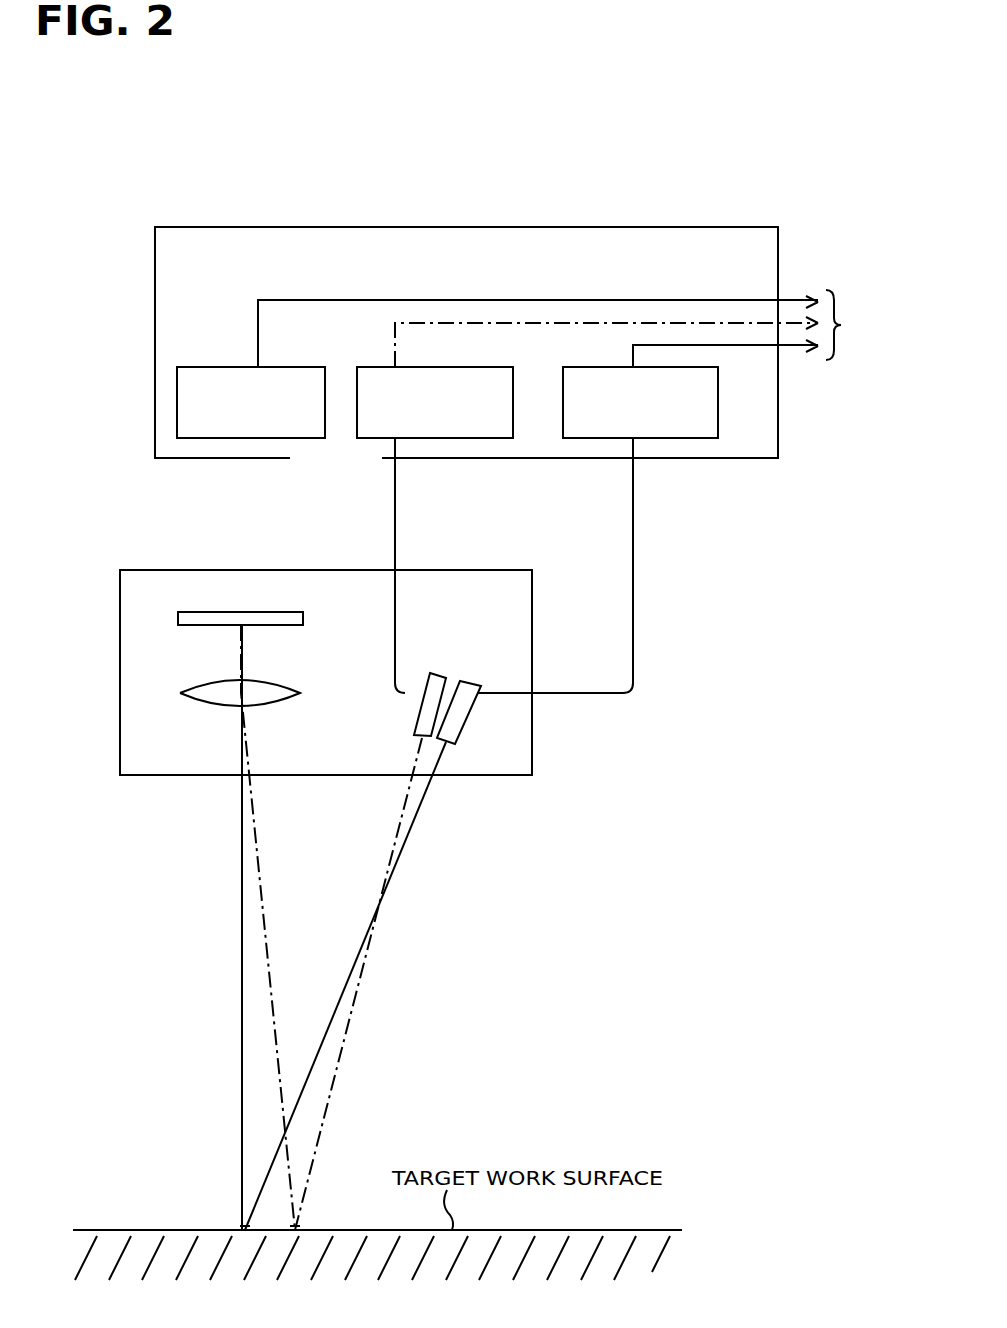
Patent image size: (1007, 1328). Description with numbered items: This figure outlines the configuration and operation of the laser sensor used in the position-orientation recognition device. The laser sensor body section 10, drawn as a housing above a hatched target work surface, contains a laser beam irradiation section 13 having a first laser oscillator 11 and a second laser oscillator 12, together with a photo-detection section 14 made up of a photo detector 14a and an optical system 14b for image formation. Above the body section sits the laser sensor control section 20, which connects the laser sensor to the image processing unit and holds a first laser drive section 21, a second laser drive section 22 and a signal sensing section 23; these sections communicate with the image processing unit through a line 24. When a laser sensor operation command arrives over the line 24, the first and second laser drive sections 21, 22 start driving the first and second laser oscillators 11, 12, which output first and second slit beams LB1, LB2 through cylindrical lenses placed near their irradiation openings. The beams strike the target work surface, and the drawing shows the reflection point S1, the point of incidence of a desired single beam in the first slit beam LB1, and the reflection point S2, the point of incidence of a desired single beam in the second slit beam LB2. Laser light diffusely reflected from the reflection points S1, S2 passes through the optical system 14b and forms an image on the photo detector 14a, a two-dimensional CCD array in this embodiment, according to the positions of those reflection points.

The laser sensor body section 10 is at (507, 784).
The first laser oscillator 11 is at (443, 674).
The second laser oscillator 12 is at (472, 712).
The laser beam irradiation section 13 is at (377, 763).
The photo-detection section 14 is at (197, 875).
The photo detector 14a is at (212, 611).
The optical system 14b is at (207, 701).
The laser sensor control section 20 is at (532, 221).
The first laser drive section 21 is at (712, 438).
The second laser drive section 22 is at (492, 438).
The signal sensing section 23 is at (318, 438).
The line 24 is at (845, 325).
The first slit beam LB1 is at (355, 963).
The second slit beam LB2 is at (346, 1039).
The reflection point S1 is at (240, 1226).
The reflection point S2 is at (300, 1224).